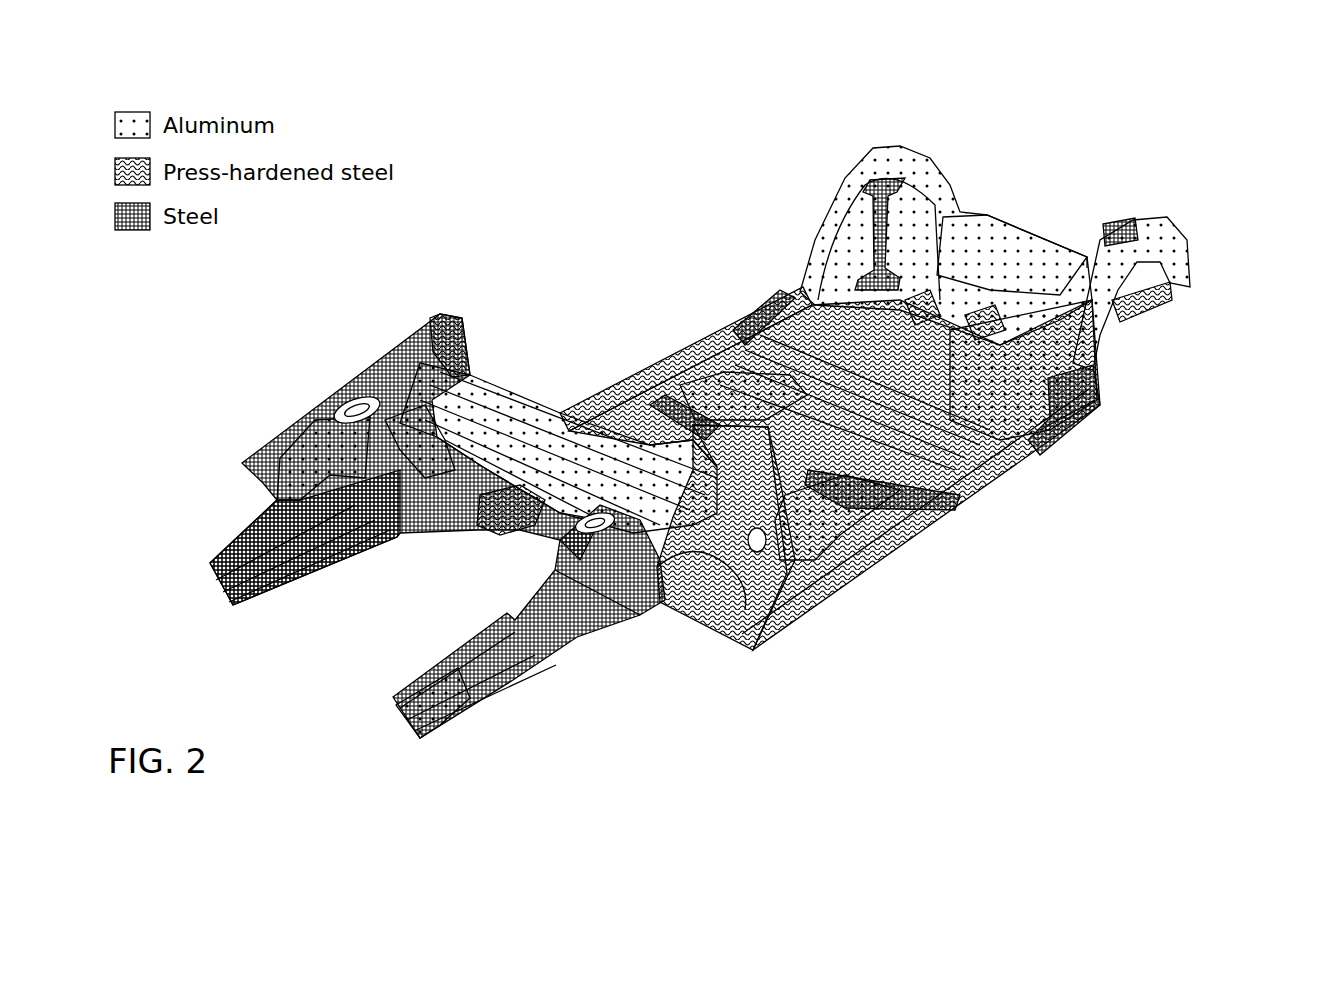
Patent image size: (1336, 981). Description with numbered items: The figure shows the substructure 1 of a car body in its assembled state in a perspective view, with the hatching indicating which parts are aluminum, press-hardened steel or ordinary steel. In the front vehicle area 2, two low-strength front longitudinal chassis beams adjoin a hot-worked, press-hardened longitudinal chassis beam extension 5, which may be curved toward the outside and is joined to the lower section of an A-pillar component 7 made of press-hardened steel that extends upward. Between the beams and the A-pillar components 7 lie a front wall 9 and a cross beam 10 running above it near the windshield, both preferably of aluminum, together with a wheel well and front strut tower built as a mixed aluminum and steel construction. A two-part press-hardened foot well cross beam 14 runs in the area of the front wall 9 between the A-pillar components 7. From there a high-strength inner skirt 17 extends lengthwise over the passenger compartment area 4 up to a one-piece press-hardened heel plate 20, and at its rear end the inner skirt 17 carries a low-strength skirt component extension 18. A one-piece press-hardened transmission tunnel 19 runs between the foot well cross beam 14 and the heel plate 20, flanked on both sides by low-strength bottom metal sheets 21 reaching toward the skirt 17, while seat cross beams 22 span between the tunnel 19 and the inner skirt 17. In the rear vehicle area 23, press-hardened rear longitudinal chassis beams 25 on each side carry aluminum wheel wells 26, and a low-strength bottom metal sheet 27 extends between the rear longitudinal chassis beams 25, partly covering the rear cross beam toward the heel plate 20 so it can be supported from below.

The substructure 1 is at (671, 200).
The front vehicle area 2 is at (240, 418).
The passenger compartment area 4 is at (640, 298).
The longitudinal chassis beam extension 5 is at (708, 602).
The A-pillar component 7 is at (450, 330).
The front wall 9 is at (490, 472).
The cross beam 10 is at (507, 417).
The foot well cross beam 14 is at (515, 517).
The inner skirt 17 is at (615, 395).
The skirt component extension 18 is at (773, 300).
The transmission tunnel 19 is at (980, 497).
The heel plate 20 is at (1035, 432).
The bottom metal sheet 21 is at (722, 388).
The seat cross beam 22 is at (693, 420).
The rear vehicle area 23 is at (985, 148).
The rear longitudinal chassis beam 25 is at (1135, 305).
The wheel well 26 is at (877, 150).
The bottom metal sheet 27 is at (1015, 270).